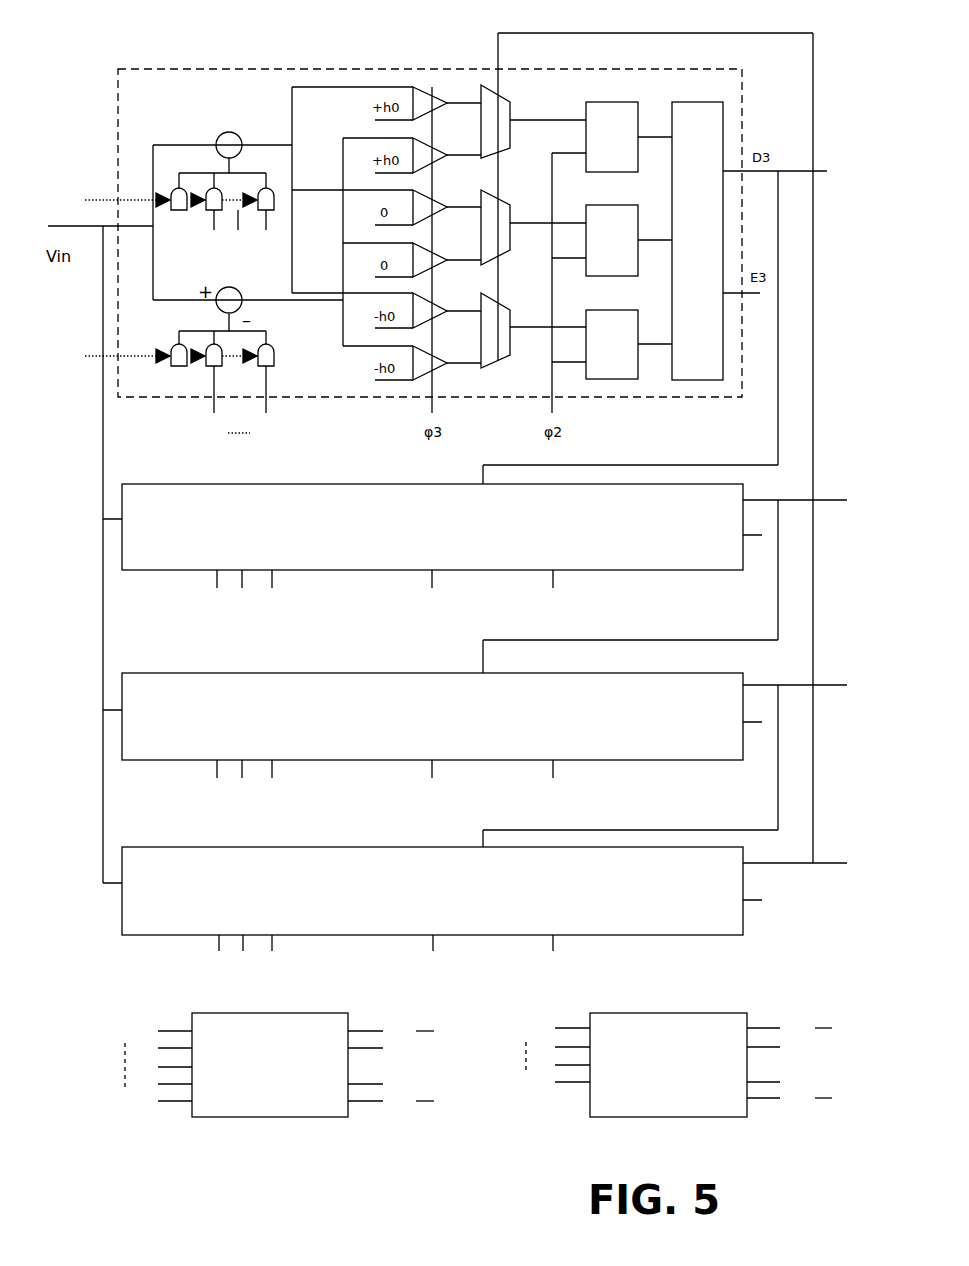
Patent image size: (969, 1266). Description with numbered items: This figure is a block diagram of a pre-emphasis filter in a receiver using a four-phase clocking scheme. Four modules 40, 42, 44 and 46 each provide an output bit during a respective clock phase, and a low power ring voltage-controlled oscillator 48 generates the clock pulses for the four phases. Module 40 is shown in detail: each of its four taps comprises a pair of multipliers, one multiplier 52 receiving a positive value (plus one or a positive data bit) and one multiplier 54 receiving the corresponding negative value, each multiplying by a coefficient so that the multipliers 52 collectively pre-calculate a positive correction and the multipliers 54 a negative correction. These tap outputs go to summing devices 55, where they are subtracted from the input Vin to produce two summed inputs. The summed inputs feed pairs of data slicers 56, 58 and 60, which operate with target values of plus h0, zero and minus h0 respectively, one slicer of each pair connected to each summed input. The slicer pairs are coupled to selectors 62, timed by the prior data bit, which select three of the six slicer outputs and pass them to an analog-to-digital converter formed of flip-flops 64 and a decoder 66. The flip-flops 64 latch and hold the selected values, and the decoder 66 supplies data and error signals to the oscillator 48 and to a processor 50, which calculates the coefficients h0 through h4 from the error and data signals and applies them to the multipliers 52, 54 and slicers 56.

The module 40 is at (178, 72).
The module 42 is at (440, 544).
The module 44 is at (440, 732).
The module 46 is at (440, 907).
The ring voltage-controlled oscillator 48 is at (588, 1100).
The processor 50 is at (297, 1117).
The multiplier 52 is at (157, 197).
The multiplier 54 is at (170, 366).
The summing device 55 is at (221, 132).
The data slicer 56 is at (410, 100).
The data slicer 58 is at (440, 196).
The data slicer 60 is at (440, 372).
The selector 62 is at (507, 100).
The flip-flop 64 is at (637, 110).
The decoder 66 is at (724, 145).